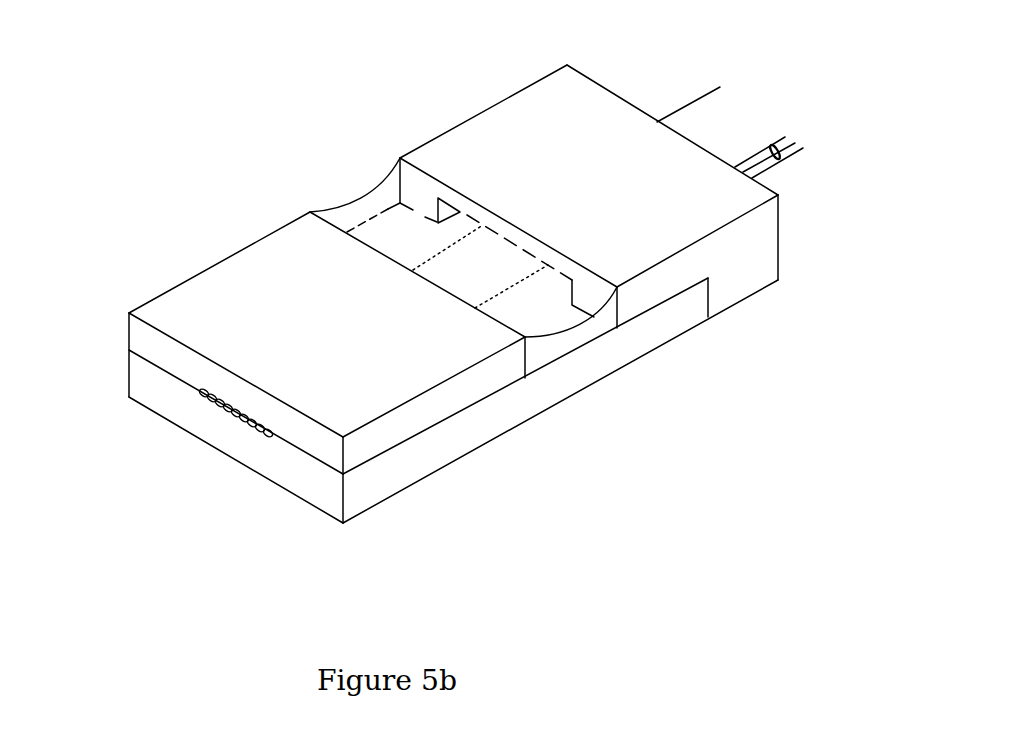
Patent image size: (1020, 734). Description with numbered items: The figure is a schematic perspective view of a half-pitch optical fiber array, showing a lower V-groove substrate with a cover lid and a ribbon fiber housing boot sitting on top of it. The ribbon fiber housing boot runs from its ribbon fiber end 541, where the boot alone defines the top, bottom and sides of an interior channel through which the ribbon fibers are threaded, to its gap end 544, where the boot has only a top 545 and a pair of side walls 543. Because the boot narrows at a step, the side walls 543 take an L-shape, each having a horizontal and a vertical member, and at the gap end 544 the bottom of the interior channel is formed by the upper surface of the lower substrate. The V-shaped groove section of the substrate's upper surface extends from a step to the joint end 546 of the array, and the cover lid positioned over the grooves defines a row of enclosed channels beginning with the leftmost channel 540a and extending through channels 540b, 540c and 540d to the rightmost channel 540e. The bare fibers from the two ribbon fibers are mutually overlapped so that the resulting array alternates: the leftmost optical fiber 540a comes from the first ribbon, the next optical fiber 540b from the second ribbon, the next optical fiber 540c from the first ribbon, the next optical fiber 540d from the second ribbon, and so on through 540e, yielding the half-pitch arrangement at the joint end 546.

The ribbon fiber end 541 is at (780, 240).
The side walls 543 is at (468, 119).
The gap end 544 is at (410, 179).
The top 545 is at (585, 118).
The joint end 546 is at (143, 333).
The leftmost channel 540a is at (198, 397).
The channel 540b is at (198, 406).
The channel 540c is at (198, 413).
The channel 540d is at (215, 413).
The rightmost channel 540e is at (268, 436).